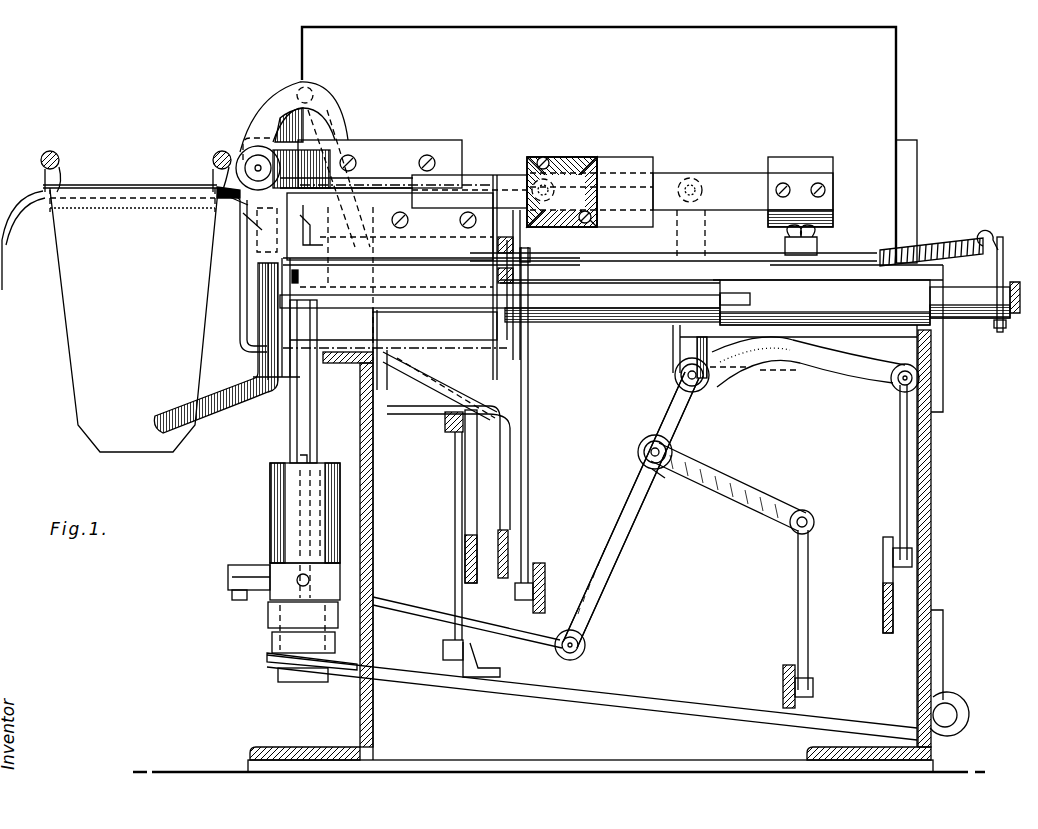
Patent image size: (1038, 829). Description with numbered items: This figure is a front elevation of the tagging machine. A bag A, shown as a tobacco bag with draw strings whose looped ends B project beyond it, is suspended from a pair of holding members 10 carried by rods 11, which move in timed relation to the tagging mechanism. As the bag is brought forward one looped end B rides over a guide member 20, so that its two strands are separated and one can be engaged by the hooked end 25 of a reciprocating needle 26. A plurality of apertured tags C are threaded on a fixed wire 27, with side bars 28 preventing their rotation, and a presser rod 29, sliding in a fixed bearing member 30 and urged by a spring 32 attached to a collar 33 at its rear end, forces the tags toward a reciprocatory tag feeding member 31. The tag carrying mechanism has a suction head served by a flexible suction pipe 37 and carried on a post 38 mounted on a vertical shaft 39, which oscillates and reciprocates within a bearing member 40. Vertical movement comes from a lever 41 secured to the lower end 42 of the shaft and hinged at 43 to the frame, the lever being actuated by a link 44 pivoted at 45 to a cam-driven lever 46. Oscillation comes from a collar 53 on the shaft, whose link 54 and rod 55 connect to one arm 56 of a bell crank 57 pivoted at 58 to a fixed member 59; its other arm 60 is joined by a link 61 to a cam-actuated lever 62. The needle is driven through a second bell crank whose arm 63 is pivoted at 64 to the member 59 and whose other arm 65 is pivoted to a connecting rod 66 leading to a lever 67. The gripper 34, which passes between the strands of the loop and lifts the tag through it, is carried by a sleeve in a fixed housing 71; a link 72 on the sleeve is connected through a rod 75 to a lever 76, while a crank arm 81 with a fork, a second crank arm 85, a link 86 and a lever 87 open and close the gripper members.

The holding members 10 is at (43, 183).
The rods 11 is at (42, 156).
The bag A is at (121, 195).
The looped ends B is at (243, 213).
The tags C is at (440, 386).
The guide member 20 is at (232, 199).
The hooked end 25 is at (340, 185).
The reciprocating needle 26 is at (475, 187).
The fixed wire 27 is at (403, 260).
The side bars 28 is at (433, 285).
The presser rod 29 is at (563, 317).
The fixed bearing member 30 is at (715, 302).
The tag feeding member 31 is at (267, 222).
The spring 32 is at (962, 243).
The collar 33 is at (997, 272).
The gripper 34 is at (333, 108).
The flexible suction pipe 37 is at (262, 297).
The post 38 is at (277, 317).
The vertical shaft 39 is at (297, 397).
The bearing member 40 is at (275, 490).
The lever 41 is at (613, 698).
The lower end of shaft 42 is at (302, 670).
The hinge 43 is at (948, 723).
The link 44 is at (453, 520).
The pivot 45 is at (453, 413).
The lever 46 is at (465, 487).
The collar 53 is at (288, 583).
The link 54 is at (250, 563).
The rod 55 is at (430, 612).
The arm of bell crank 56 is at (607, 586).
The bell crank 57 is at (667, 483).
The pivot 58 is at (667, 441).
The fixed member 59 is at (659, 411).
The arm of bell crank 60 is at (572, 163).
The link 61 is at (745, 167).
The lever 62 is at (675, 182).
The arm of bell crank 63 is at (697, 240).
The pivot 64 is at (674, 368).
The arm of bell crank 65 is at (803, 352).
The connecting rod 66 is at (898, 431).
The lever 67 is at (885, 604).
The fixed housing 71 is at (234, 149).
The link 72 is at (293, 138).
The rod 75 is at (353, 128).
The lever 76 is at (510, 500).
The crank arm 81 is at (300, 225).
The second crank arm 85 is at (517, 250).
The link 86 is at (529, 429).
The lever 87 is at (550, 572).